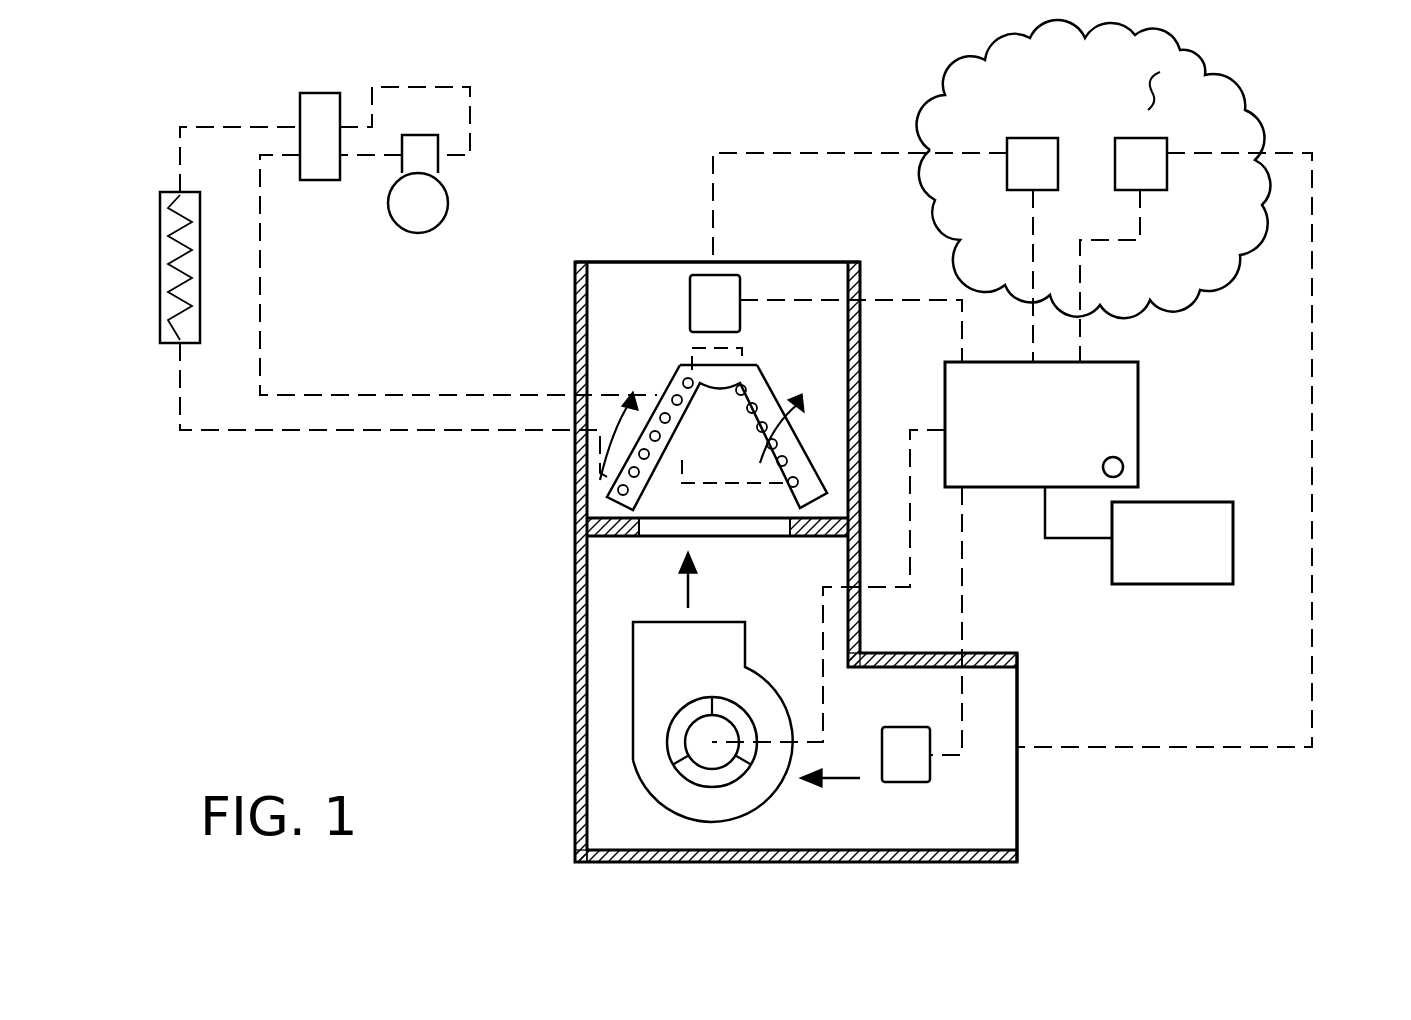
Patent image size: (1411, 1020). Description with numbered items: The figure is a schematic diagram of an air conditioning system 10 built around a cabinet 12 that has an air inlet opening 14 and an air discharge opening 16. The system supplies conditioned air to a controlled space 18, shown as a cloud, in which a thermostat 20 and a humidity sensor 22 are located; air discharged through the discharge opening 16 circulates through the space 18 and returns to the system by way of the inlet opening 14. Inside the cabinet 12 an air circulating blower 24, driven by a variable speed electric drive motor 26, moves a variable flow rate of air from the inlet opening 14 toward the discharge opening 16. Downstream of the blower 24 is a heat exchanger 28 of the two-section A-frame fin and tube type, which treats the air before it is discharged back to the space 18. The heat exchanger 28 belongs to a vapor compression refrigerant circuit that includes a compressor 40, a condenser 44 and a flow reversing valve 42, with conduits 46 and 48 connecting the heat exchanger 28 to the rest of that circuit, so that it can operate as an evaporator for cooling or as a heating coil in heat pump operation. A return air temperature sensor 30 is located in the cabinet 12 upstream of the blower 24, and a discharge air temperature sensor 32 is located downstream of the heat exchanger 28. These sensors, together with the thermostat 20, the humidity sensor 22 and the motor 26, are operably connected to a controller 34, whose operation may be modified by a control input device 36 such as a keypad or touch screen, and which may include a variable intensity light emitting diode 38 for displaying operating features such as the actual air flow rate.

The air conditioning system 10 is at (528, 609).
The cabinet 12 is at (575, 702).
The air inlet opening 14 is at (1017, 812).
The air discharge opening 16 is at (637, 262).
The controlled space 18 is at (1183, 62).
The thermostat 20 is at (1058, 153).
The humidity sensor 22 is at (1167, 155).
The air circulating blower 24 is at (690, 824).
The variable speed electric drive motor 26 is at (700, 740).
The heat exchanger 28 is at (742, 470).
The return air temperature sensor 30 is at (910, 782).
The discharge air temperature sensor 32 is at (690, 292).
The controller 34 is at (1162, 397).
The control input device 36 is at (1233, 540).
The light emitting diode 38 is at (1120, 460).
The compressor 40 is at (390, 203).
The flow reversing valve 42 is at (320, 93).
The condenser 44 is at (160, 300).
The conduit 46 is at (482, 395).
The conduit 48 is at (345, 432).